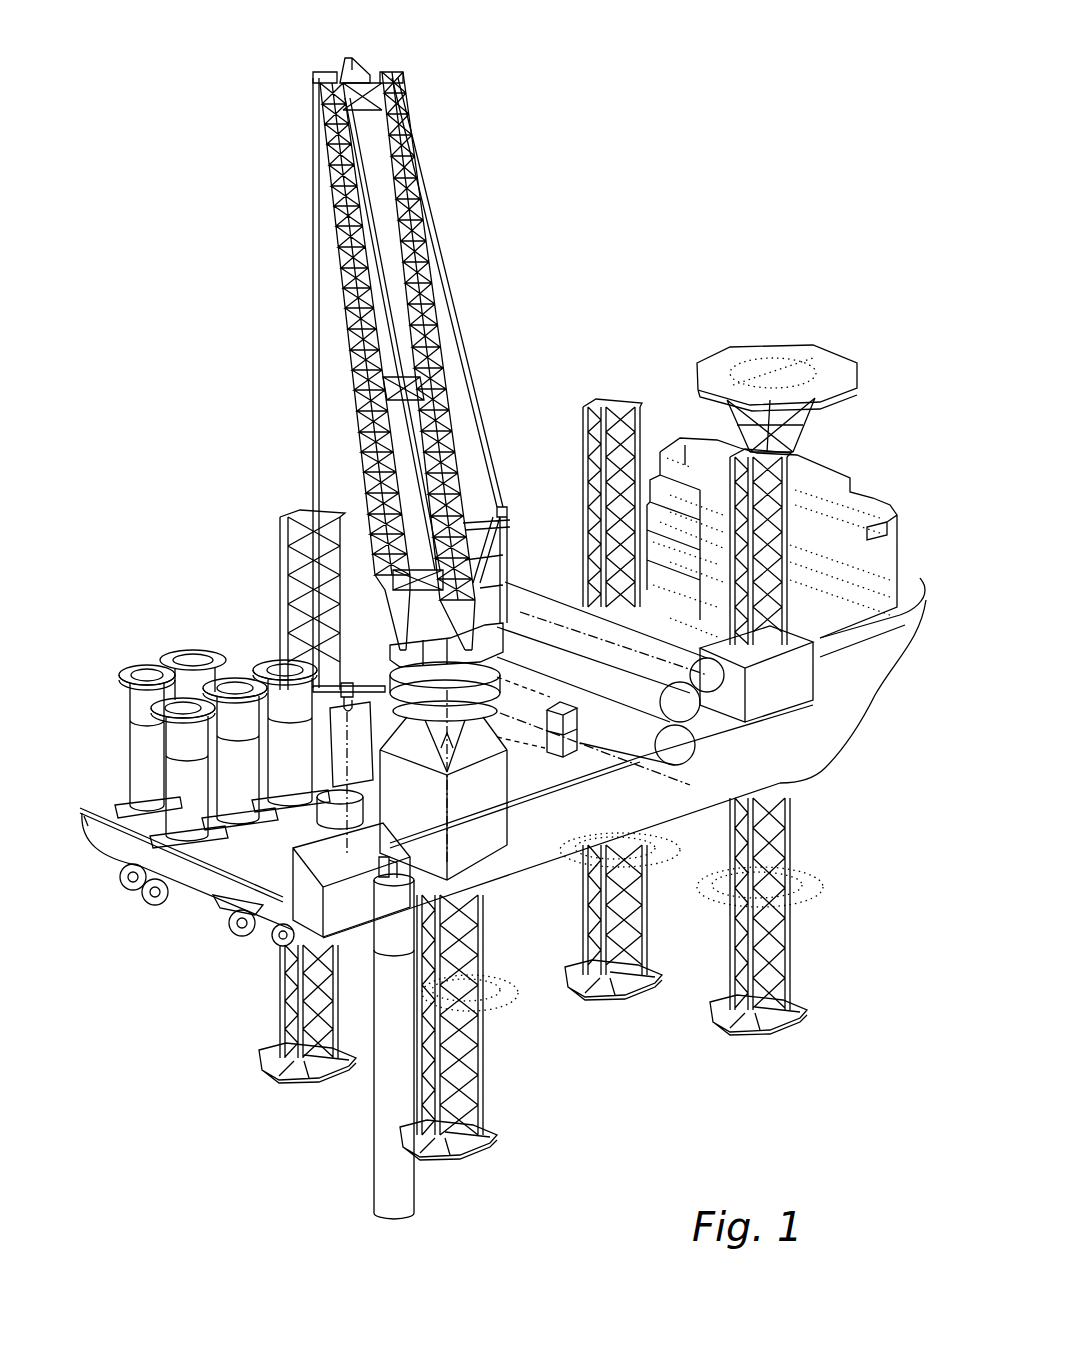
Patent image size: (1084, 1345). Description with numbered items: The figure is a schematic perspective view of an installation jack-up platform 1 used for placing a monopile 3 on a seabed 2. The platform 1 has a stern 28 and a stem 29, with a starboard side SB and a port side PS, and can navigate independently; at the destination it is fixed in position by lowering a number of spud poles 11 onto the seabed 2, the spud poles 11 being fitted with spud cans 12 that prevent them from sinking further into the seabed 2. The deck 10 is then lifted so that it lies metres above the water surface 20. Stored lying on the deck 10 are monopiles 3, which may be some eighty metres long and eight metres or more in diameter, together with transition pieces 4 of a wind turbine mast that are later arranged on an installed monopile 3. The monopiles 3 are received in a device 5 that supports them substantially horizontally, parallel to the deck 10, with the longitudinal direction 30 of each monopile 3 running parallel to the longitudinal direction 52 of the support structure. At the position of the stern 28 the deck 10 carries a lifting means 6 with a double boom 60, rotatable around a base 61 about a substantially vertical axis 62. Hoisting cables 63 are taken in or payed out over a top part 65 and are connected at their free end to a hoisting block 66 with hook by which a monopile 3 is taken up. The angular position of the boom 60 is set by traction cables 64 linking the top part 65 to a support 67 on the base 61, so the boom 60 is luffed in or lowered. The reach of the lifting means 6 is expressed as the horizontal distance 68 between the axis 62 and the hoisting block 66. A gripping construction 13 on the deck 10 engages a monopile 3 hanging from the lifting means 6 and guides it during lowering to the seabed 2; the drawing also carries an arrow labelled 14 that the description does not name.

The installation jack-up platform 1 is at (150, 512).
The seabed 2 is at (647, 1129).
The monopile 3 is at (641, 696).
The transition piece 4 is at (185, 758).
The device 5 is at (589, 761).
The lifting means 6 is at (288, 312).
The deck 10 is at (283, 859).
The spud poles 11 is at (648, 910).
The spud cans 12 is at (580, 965).
The gripping construction 13 is at (358, 995).
The longitudinal direction 14 is at (788, 747).
The water surface 20 is at (813, 877).
The stern 28 is at (125, 862).
The stem 29 is at (920, 585).
The longitudinal direction of monopile 30 is at (755, 706).
The longitudinal direction of support structure 52 is at (683, 783).
The double boom 60 is at (325, 215).
The base 61 is at (480, 797).
The vertical axis 62 is at (450, 855).
The hoisting cables 63 is at (318, 400).
The traction cables 64 is at (445, 268).
The top part 65 is at (370, 75).
The hoisting block 66 is at (348, 683).
The support 67 is at (507, 560).
The horizontal distance 68 is at (355, 855).
The port side PS is at (112, 800).
The starboard side SB is at (865, 670).